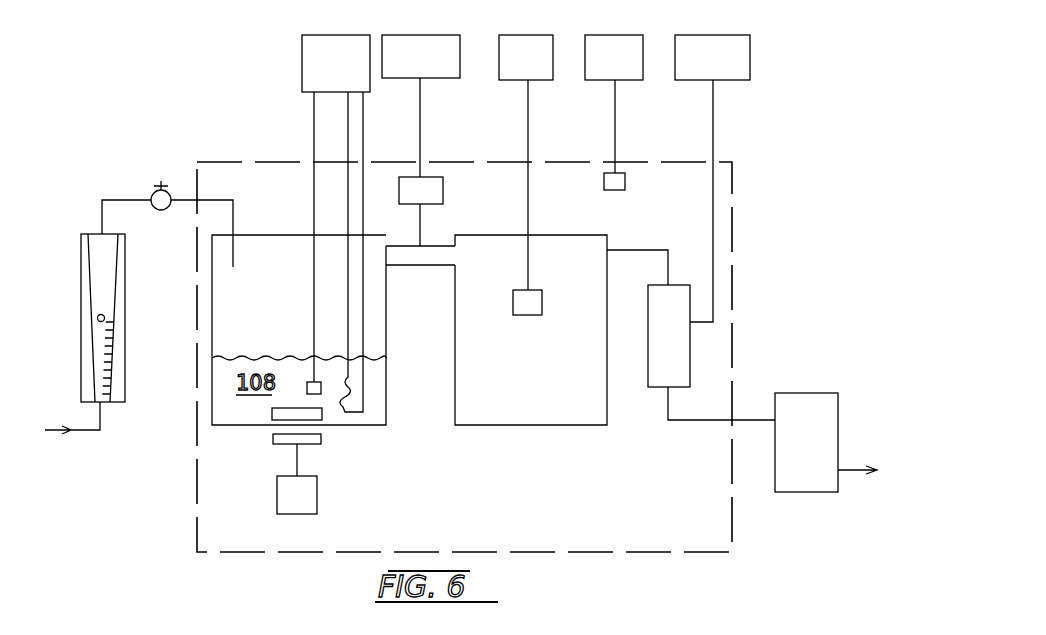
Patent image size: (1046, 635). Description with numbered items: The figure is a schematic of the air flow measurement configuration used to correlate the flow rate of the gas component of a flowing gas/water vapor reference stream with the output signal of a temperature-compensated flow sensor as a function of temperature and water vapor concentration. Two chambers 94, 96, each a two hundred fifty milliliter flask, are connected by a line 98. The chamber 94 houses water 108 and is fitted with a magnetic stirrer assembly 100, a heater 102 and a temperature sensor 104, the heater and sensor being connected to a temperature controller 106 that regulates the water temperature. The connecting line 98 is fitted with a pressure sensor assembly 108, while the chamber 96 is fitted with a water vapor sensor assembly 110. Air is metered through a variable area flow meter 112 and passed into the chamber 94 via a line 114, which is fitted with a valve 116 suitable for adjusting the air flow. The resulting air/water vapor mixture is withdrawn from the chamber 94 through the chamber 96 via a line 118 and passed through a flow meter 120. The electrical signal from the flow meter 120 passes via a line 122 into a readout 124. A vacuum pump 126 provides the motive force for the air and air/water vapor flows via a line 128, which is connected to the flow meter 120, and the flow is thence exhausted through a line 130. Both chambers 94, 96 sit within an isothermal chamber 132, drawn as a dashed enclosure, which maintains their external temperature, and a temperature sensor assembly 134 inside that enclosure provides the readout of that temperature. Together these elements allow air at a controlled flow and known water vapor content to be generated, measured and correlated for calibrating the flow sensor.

The chamber 94 is at (250, 425).
The chamber 96 is at (521, 427).
The line 98 is at (428, 267).
The magnetic stirrer assembly 100 is at (330, 465).
The heater 102 is at (342, 400).
The temperature sensor 104 is at (307, 386).
The temperature controller 106 is at (302, 62).
The pressure sensor assembly 108 is at (421, 120).
The water vapor sensor assembly 110 is at (528, 123).
The variable area flow meter 112 is at (111, 352).
The line 114 is at (120, 200).
The valve 116 is at (162, 180).
The line 118 is at (639, 250).
The flow meter 120 is at (691, 347).
The line 122 is at (714, 124).
The readout 124 is at (705, 35).
The vacuum pump 126 is at (813, 393).
The line 128 is at (690, 420).
The line 130 is at (850, 474).
The isothermal chamber 132 is at (197, 524).
The temperature sensor assembly 134 is at (615, 124).